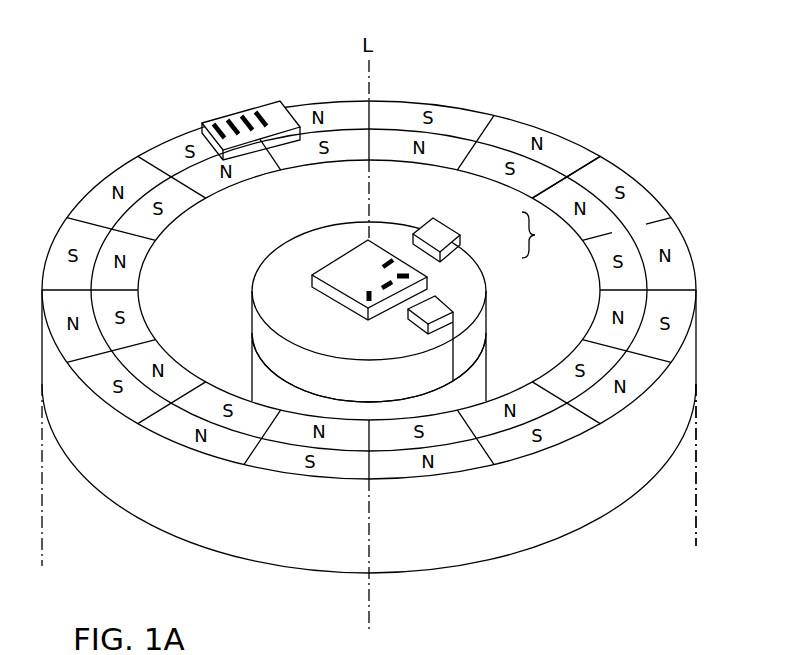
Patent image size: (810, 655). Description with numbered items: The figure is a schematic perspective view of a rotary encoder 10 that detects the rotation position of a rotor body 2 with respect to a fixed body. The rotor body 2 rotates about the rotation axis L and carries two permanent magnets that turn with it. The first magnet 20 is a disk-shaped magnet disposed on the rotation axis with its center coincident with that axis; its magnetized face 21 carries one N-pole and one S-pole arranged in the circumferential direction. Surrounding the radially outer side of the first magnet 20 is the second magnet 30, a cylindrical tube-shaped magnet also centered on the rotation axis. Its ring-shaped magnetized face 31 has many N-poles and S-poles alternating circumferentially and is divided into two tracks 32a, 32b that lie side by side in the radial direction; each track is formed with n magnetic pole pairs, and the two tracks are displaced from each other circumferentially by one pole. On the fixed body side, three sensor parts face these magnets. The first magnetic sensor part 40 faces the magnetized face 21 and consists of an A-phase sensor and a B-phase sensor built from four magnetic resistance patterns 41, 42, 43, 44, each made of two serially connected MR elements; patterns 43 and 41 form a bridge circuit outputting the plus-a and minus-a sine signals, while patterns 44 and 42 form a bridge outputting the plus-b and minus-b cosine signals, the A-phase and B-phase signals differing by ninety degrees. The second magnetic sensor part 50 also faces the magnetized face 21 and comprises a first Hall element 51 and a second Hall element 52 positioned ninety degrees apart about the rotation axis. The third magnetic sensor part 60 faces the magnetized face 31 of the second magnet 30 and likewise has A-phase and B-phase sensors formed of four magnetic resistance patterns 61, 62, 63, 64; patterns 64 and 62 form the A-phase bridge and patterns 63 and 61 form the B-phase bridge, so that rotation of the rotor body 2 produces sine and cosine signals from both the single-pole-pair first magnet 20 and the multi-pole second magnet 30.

The rotary encoder 10 is at (680, 58).
The rotor body 2 is at (700, 527).
The first magnet 20 is at (328, 215).
The magnetized face 21 is at (404, 346).
The second magnet 30 is at (646, 176).
The magnetized face 31 is at (639, 243).
The track 32a is at (565, 152).
The track 32b is at (492, 155).
The first magnetic sensor part 40 is at (300, 265).
The magnetic resistance pattern 41 is at (386, 264).
The magnetic resistance pattern 42 is at (398, 277).
The magnetic resistance pattern 43 is at (384, 287).
The magnetic resistance pattern 44 is at (369, 299).
The second magnetic sensor part 50 is at (541, 235).
The first Hall element 51 is at (462, 226).
The second Hall element 52 is at (456, 295).
The third magnetic sensor part 60 is at (275, 92).
The magnetic resistance pattern 61 is at (257, 112).
The magnetic resistance pattern 62 is at (242, 117).
The magnetic resistance pattern 63 is at (228, 122).
The magnetic resistance pattern 64 is at (213, 127).